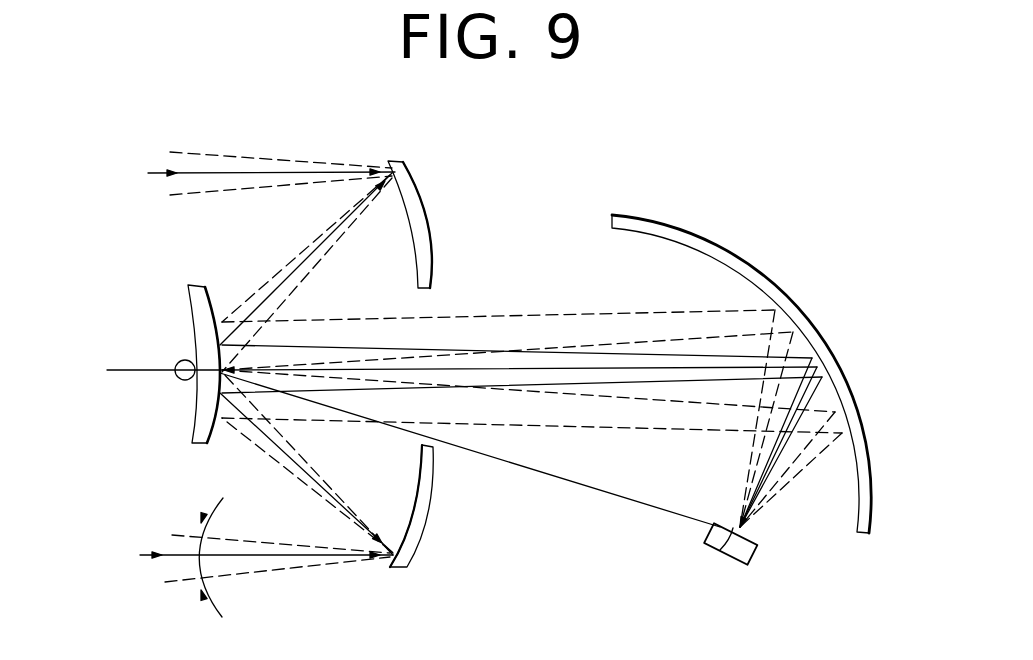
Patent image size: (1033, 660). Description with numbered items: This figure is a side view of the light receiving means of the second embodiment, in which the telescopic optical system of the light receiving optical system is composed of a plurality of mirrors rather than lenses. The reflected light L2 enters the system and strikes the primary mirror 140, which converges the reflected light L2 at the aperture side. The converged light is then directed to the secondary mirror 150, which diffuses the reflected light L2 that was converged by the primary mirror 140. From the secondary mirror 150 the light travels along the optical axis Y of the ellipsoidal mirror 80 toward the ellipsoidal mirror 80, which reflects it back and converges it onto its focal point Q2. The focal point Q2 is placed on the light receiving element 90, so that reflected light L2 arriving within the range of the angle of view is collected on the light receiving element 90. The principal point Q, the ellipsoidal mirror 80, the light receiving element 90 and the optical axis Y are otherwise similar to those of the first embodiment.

The ellipsoidal mirror 80 is at (866, 534).
The light receiving element 90 is at (757, 550).
The primary mirror 140 is at (432, 512).
The secondary mirror 150 is at (222, 432).
The reflected light L2 is at (166, 173).
The light source point Q is at (183, 381).
The focal point Q2 is at (712, 555).
The optical axis Y is at (528, 472).